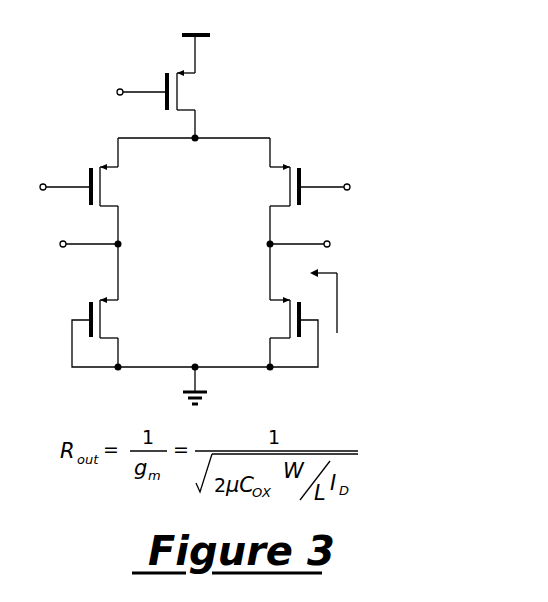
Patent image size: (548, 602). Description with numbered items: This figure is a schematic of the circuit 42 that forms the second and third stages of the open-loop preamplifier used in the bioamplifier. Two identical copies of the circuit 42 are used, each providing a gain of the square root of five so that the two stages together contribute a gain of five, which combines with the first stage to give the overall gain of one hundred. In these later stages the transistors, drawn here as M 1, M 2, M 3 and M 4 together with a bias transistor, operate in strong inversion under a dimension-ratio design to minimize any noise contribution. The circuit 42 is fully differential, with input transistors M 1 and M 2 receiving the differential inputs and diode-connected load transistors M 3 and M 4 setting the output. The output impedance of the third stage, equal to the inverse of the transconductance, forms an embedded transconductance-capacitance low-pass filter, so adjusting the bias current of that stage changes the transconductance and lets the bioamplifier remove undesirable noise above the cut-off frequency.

The circuit 42 is at (270, 61).
The transistor M1 1 is at (118, 185).
The transistor M2 2 is at (267, 185).
The transistor M3 3 is at (117, 319).
The transistor M4 4 is at (269, 319).